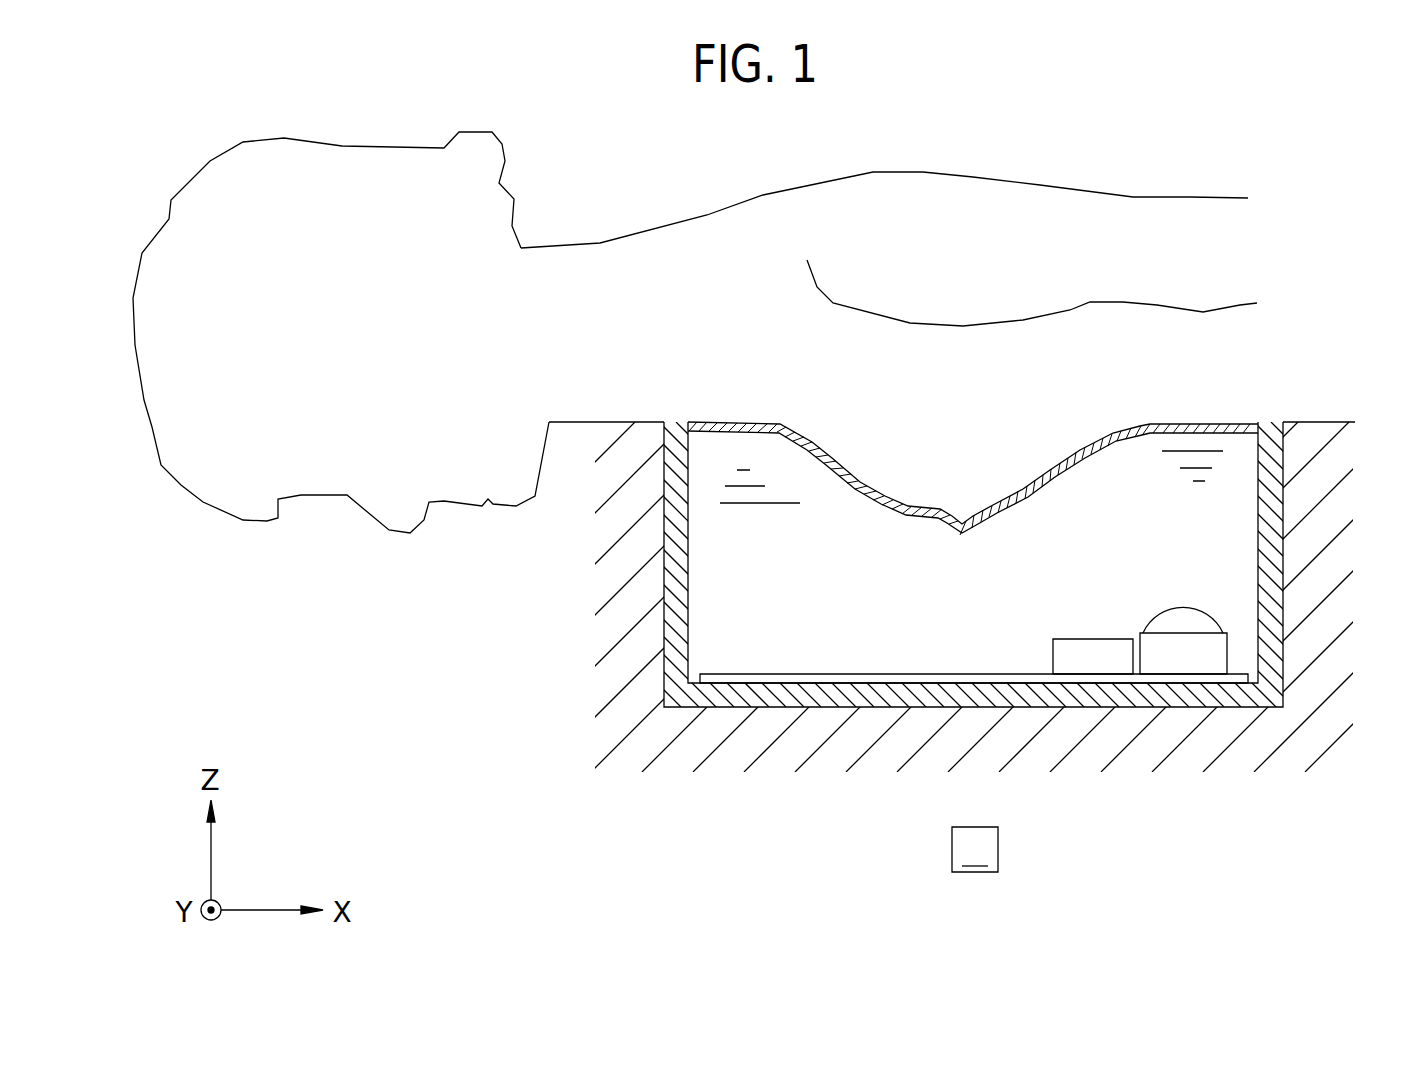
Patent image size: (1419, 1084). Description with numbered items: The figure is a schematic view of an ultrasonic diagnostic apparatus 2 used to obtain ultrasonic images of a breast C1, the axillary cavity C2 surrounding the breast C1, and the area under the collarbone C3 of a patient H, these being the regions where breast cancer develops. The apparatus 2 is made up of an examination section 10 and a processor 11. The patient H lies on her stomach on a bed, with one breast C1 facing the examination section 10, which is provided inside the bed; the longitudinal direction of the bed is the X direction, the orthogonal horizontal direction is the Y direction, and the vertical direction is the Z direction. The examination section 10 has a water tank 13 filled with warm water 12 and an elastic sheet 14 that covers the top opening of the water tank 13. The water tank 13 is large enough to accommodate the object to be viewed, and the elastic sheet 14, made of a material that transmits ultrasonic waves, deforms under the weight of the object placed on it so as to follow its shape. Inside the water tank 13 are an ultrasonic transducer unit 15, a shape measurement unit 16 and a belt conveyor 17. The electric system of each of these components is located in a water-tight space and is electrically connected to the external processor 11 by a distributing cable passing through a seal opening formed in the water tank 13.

The ultrasonic diagnostic apparatus 2 is at (1170, 845).
The examination section 10 is at (550, 612).
The processor 11 is at (975, 720).
The warm water 12 is at (1236, 469).
The water tank 13 is at (1157, 695).
The elastic sheet 14 is at (844, 474).
The ultrasonic transducer unit 15 is at (1181, 610).
The shape measurement unit 16 is at (1066, 636).
The belt conveyor 17 is at (797, 672).
The patient H is at (1077, 205).
The breast C1 is at (981, 479).
The axillary cavity C2 is at (970, 370).
The area under the collarbone C3 is at (775, 402).